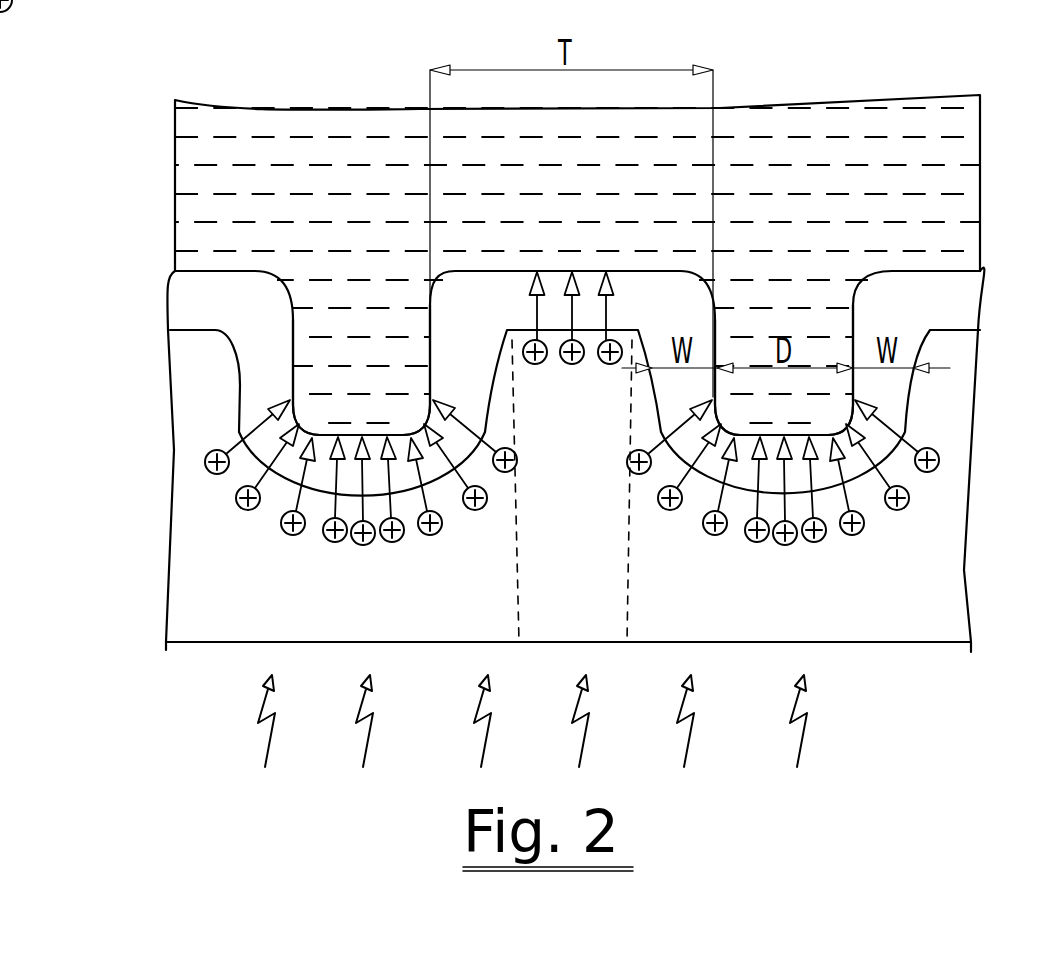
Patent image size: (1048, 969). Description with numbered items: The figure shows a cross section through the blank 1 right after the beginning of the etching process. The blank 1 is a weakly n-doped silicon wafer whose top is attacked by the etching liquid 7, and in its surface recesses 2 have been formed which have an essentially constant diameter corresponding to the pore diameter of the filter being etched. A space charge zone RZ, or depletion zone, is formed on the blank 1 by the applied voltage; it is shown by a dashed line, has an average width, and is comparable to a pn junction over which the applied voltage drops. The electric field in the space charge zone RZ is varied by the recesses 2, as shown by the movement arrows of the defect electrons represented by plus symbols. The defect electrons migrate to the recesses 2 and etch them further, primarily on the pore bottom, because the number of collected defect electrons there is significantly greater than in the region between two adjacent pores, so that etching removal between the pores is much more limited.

The blank 1 is at (203, 563).
The recess 2 is at (353, 393).
The etching liquid 7 is at (193, 183).
The space charge zone RZ is at (240, 380).